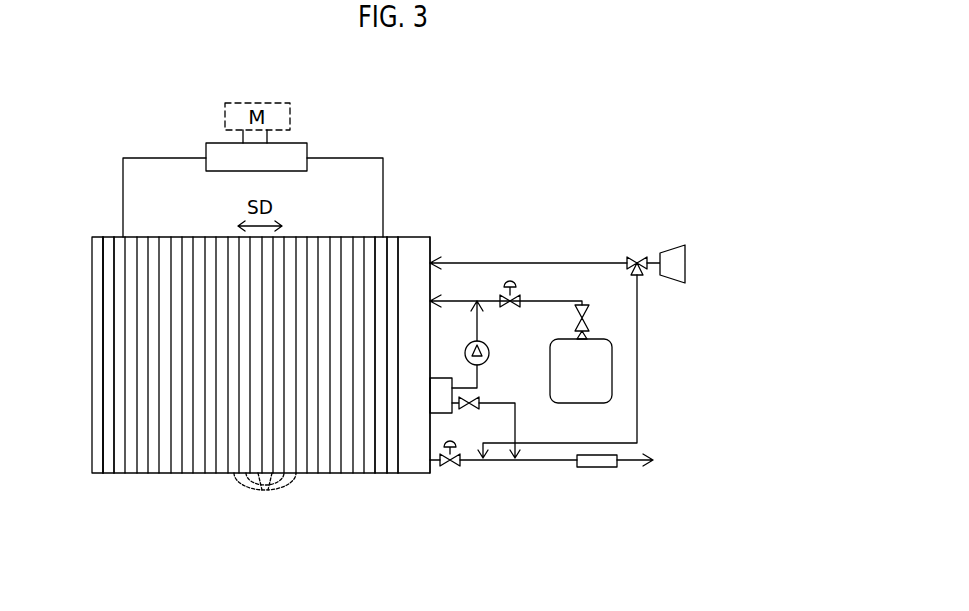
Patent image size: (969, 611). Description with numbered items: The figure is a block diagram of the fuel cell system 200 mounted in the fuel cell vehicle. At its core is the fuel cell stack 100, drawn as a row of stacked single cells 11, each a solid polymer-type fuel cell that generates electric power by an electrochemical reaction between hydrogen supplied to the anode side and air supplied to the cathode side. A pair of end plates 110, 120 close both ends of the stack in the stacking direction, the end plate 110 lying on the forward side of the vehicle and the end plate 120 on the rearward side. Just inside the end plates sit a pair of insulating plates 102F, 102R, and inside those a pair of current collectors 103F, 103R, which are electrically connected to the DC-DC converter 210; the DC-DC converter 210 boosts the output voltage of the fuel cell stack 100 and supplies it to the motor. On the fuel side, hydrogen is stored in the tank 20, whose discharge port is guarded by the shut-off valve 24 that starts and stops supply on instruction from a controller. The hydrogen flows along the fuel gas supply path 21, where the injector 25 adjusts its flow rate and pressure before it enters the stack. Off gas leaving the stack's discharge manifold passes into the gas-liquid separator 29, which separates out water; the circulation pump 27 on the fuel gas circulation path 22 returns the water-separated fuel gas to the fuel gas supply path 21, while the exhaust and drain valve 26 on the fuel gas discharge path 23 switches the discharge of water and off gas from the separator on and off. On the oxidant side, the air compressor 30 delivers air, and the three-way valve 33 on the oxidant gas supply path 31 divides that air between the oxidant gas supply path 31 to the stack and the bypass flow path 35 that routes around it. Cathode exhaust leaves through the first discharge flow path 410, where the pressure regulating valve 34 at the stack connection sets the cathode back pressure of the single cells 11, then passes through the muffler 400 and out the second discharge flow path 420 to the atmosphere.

The fuel cell stack 100 is at (255, 410).
The end plate 110 is at (93, 475).
The end plate 120 is at (413, 475).
The single cells 11 is at (262, 496).
The insulating plate 102F is at (108, 475).
The insulating plate 102R is at (392, 475).
The current collector 103F is at (121, 475).
The current collector 103R is at (377, 475).
The DC-DC converter 210 is at (305, 145).
The fuel cell system 200 is at (627, 127).
The tank 20 is at (582, 404).
The fuel gas supply path 21 is at (545, 301).
The fuel gas circulation path 22 is at (477, 388).
The fuel gas discharge path 23 is at (515, 424).
The shut-off valve 24 is at (588, 311).
The injector 25 is at (500, 297).
The exhaust and drain valve 26 is at (473, 410).
The circulation pump 27 is at (489, 353).
The gas-liquid separator 29 is at (438, 378).
The air compressor 30 is at (668, 254).
The oxidant gas supply path 31 is at (522, 263).
The three-way valve 33 is at (632, 257).
The pressure regulating valve 34 is at (451, 468).
The bypass flow path 35 is at (637, 392).
The muffler 400 is at (583, 468).
The first discharge flow path 410 is at (528, 461).
The second discharge flow path 420 is at (620, 468).